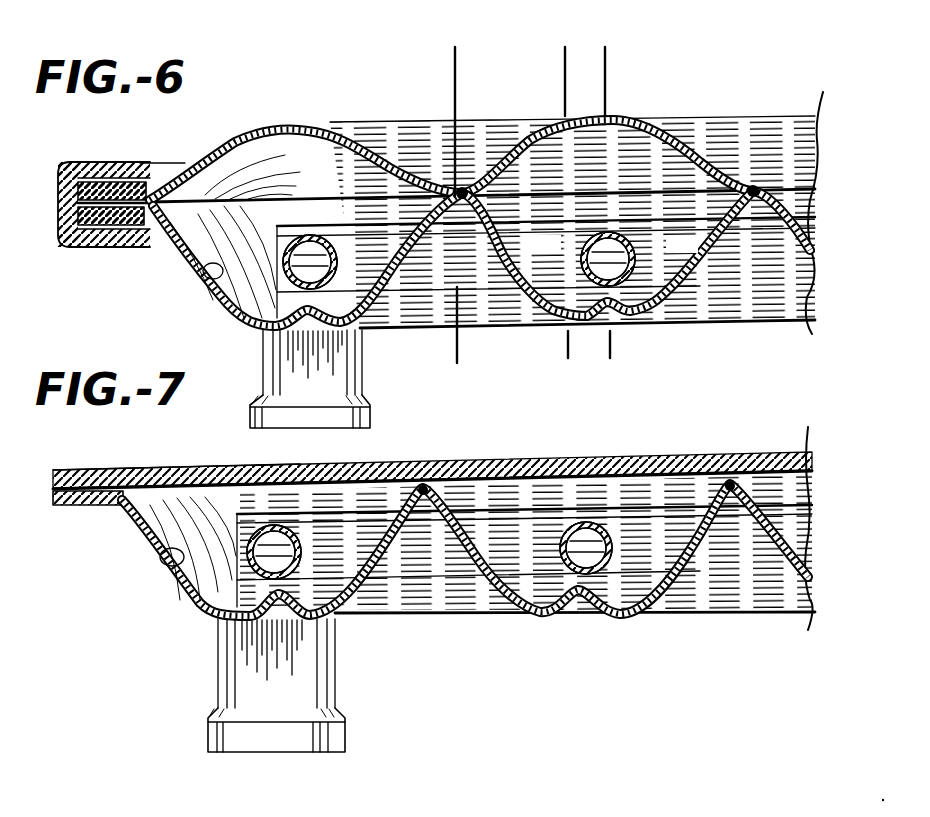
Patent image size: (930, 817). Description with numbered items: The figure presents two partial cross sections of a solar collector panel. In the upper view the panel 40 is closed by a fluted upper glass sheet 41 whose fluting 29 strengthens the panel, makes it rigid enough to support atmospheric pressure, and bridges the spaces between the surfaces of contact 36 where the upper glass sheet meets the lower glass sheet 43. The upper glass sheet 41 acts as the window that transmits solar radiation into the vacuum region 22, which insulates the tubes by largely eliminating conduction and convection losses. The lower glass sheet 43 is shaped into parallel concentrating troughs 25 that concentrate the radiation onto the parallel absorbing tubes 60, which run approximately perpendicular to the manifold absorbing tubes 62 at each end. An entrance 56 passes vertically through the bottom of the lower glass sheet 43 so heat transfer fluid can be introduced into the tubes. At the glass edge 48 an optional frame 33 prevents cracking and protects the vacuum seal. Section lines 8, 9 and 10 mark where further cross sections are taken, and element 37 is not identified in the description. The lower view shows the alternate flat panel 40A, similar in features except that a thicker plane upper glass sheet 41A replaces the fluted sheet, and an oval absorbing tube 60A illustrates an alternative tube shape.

In FIG. 6, the panel 40 is at (118, 148).
In FIG. 6, the vacuum region 22 is at (265, 146).
In FIG. 7, the vacuum region 22 is at (257, 500).
In FIG. 6, the parallel absorbing tubes 60 is at (315, 243).
In FIG. 6, the manifold absorbing tubes 62 is at (368, 214).
In FIG. 7, the manifold absorbing tubes 62 is at (660, 504).
In FIG. 6, the section line 10 is at (456, 206).
In FIG. 6, the fluting 29 is at (465, 140).
In FIG. 6, the section line 9 is at (565, 205).
In FIG. 6, the section line 8 is at (604, 204).
In FIG. 6, the upper glass sheet 41 is at (740, 116).
In FIG. 6, the frame 33 is at (70, 247).
In FIG. 6, the glass edge 48 is at (110, 247).
In FIG. 7, the glass edge 48 is at (43, 488).
In FIG. 6, the parallel concentrating troughs 25 is at (203, 265).
In FIG. 7, the parallel concentrating troughs 25 is at (153, 557).
In FIG. 6, the surfaces of contact 36 is at (497, 200).
In FIG. 7, the surfaces of contact 36 is at (480, 477).
In FIG. 6, the entrance 56 is at (365, 360).
In FIG. 7, the entrance 56 is at (342, 670).
In FIG. 6, the lower glass sheet 43 is at (725, 330).
In FIG. 7, the lower glass sheet 43 is at (450, 618).
In FIG. 7, the plane upper glass sheet 41A is at (157, 464).
In FIG. 7, the oval absorbing tube 60A is at (300, 535).
In FIG. 7, the rigid top plate 37 is at (548, 466).
In FIG. 7, the alternate flat panel 40A is at (183, 653).